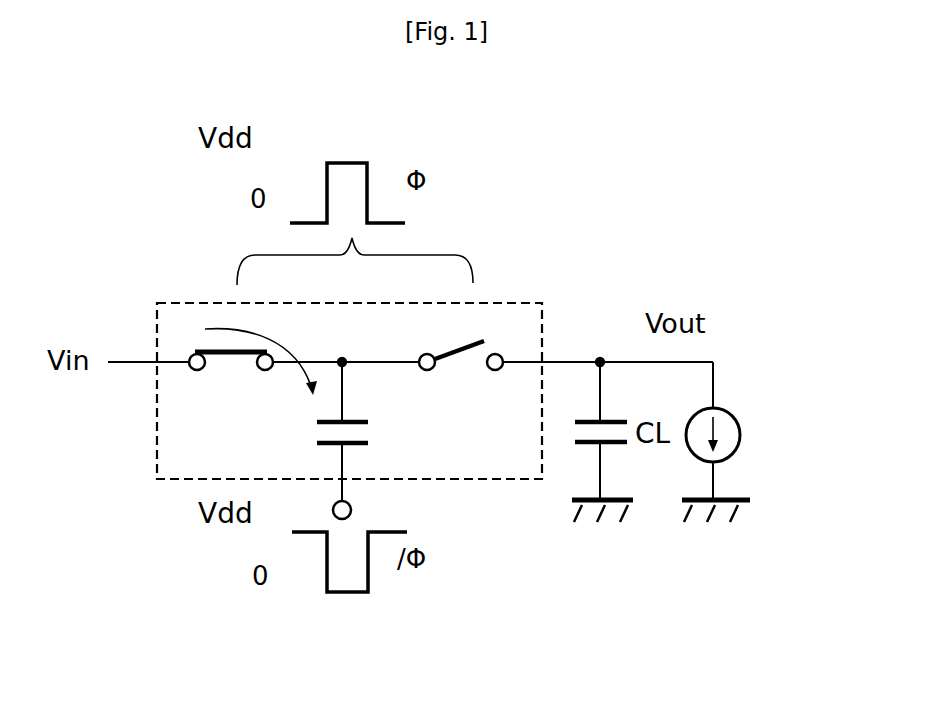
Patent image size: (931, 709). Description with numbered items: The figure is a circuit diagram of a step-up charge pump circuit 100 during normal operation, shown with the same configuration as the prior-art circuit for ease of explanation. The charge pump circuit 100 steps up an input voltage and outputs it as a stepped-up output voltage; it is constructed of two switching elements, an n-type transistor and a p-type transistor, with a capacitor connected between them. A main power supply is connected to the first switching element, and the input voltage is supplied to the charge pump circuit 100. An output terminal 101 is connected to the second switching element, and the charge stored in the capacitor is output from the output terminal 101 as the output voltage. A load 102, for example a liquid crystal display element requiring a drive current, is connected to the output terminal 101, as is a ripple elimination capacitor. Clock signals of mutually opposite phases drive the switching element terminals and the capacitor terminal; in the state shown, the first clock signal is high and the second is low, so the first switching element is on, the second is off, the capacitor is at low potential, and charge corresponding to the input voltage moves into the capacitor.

The charge pump circuit 100 is at (182, 300).
The output terminal 101 is at (600, 358).
The load 102 is at (733, 415).